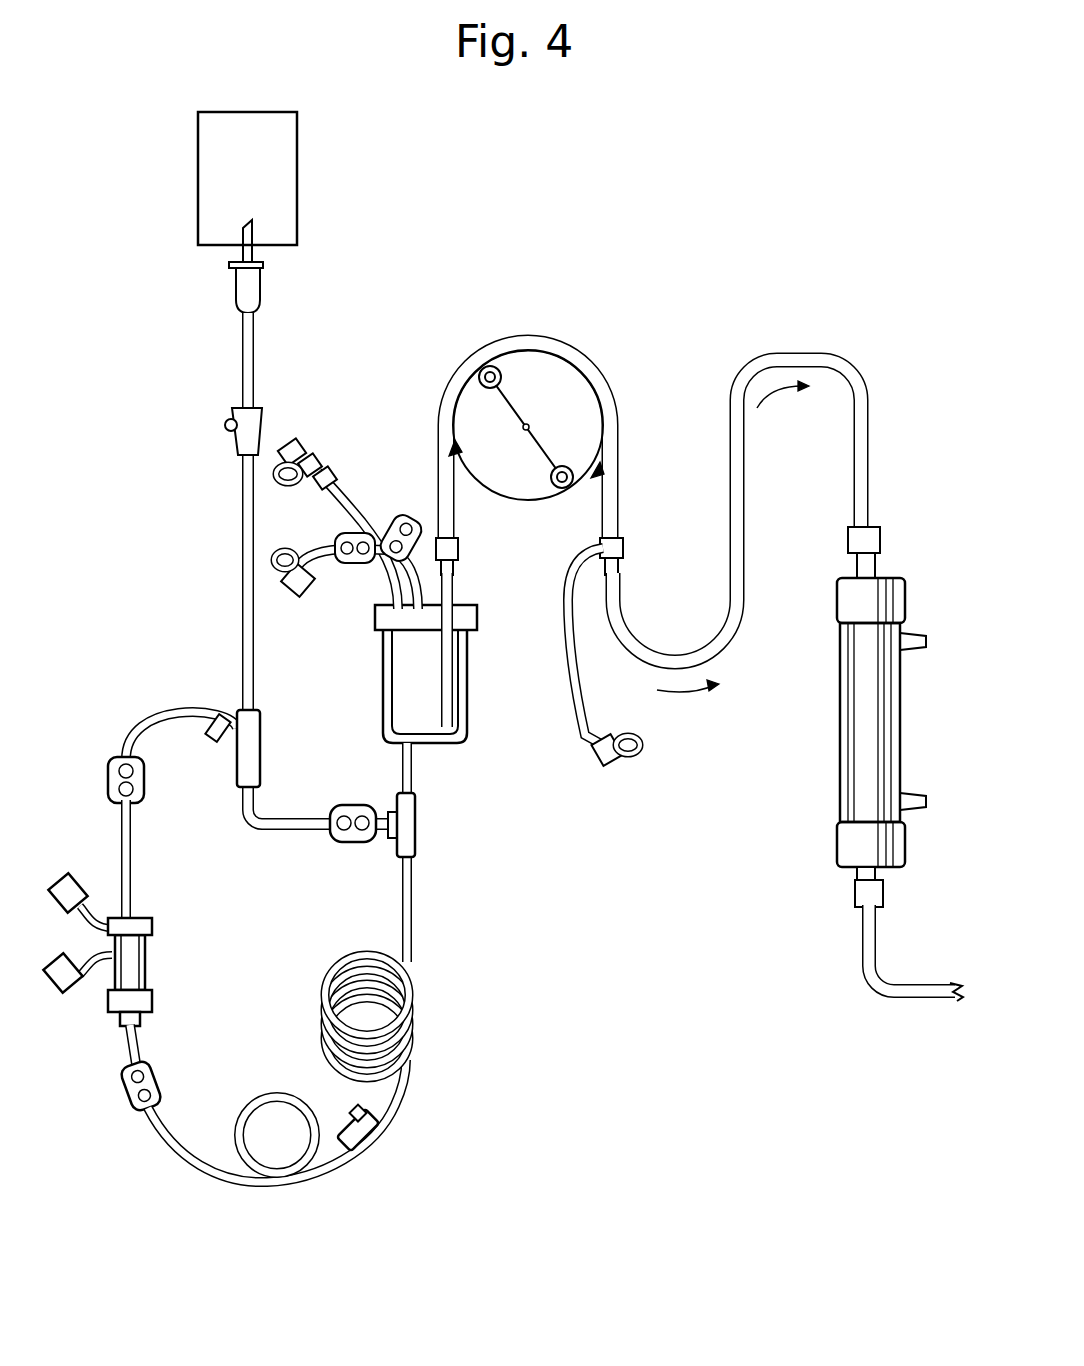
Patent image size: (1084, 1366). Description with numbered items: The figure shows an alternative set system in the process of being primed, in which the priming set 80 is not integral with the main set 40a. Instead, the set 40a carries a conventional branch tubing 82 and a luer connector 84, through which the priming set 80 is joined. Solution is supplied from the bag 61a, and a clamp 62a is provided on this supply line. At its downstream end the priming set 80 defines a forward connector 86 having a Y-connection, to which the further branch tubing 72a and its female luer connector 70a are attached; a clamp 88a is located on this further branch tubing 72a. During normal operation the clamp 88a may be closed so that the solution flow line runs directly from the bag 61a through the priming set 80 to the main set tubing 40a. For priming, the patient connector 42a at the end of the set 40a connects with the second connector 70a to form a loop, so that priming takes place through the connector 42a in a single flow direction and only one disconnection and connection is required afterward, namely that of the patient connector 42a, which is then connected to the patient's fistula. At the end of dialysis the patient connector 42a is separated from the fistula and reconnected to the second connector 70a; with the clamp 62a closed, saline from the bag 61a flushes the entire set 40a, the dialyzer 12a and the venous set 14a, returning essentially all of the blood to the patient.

The bag 61a is at (262, 184).
The priming set 80 is at (241, 540).
The further branch tubing 72a is at (205, 673).
The forward connector 86 is at (262, 714).
The clamp 88a is at (110, 758).
The luer connector 84 is at (240, 782).
The clamp 62a is at (335, 805).
The branch tubing 82 is at (300, 832).
The female luer connector 70a is at (110, 920).
The set 40a is at (413, 933).
The patient connector 42a is at (142, 1025).
The dialyzer 12a is at (852, 744).
The venous set 14a is at (925, 1000).